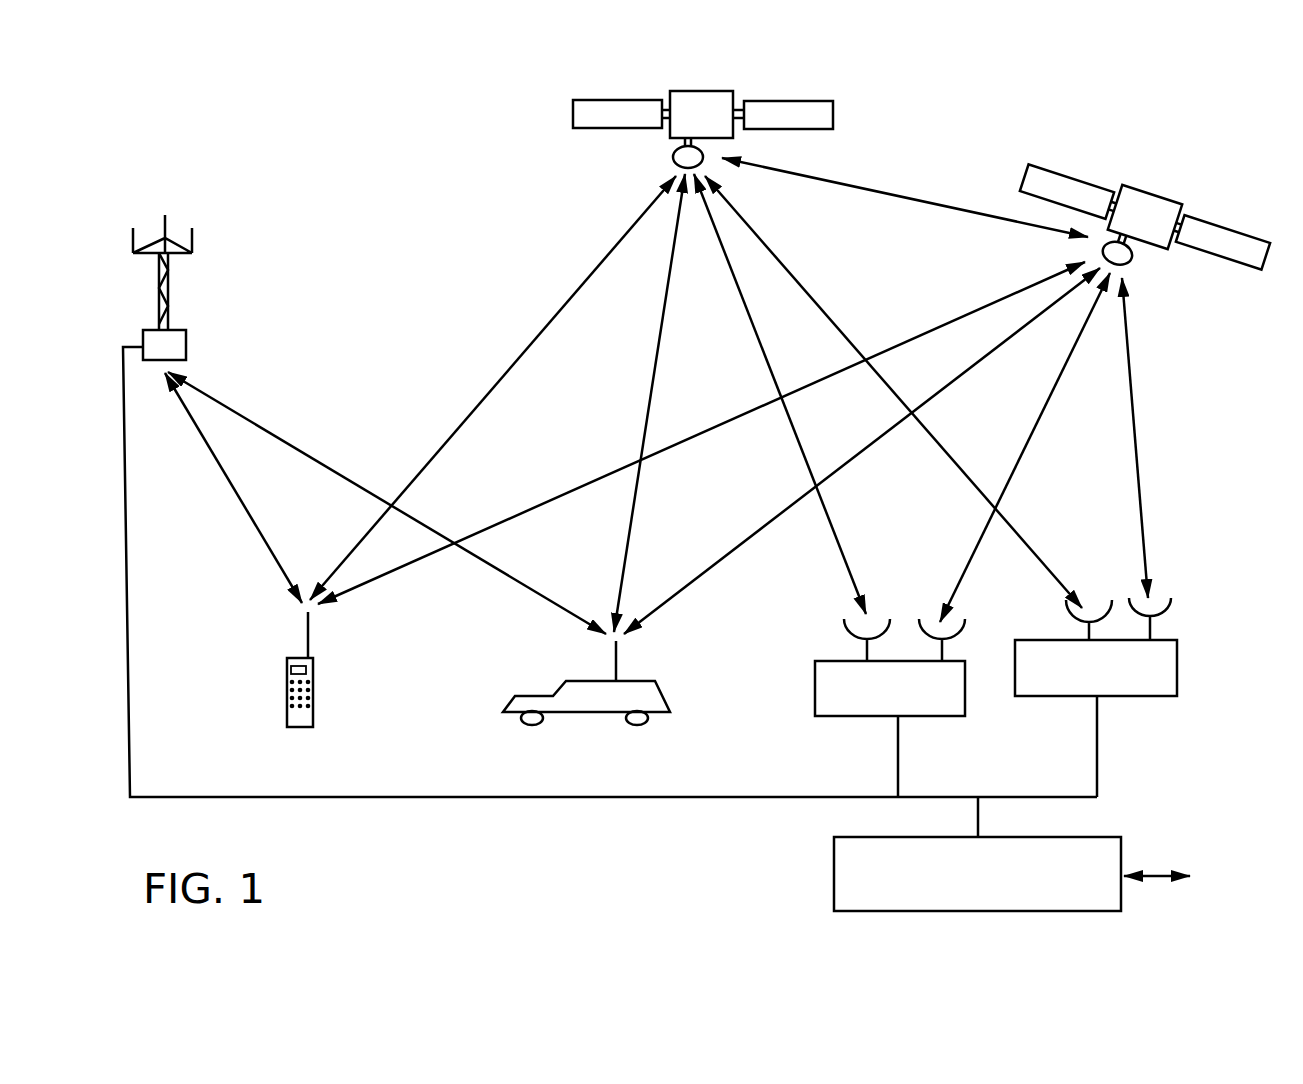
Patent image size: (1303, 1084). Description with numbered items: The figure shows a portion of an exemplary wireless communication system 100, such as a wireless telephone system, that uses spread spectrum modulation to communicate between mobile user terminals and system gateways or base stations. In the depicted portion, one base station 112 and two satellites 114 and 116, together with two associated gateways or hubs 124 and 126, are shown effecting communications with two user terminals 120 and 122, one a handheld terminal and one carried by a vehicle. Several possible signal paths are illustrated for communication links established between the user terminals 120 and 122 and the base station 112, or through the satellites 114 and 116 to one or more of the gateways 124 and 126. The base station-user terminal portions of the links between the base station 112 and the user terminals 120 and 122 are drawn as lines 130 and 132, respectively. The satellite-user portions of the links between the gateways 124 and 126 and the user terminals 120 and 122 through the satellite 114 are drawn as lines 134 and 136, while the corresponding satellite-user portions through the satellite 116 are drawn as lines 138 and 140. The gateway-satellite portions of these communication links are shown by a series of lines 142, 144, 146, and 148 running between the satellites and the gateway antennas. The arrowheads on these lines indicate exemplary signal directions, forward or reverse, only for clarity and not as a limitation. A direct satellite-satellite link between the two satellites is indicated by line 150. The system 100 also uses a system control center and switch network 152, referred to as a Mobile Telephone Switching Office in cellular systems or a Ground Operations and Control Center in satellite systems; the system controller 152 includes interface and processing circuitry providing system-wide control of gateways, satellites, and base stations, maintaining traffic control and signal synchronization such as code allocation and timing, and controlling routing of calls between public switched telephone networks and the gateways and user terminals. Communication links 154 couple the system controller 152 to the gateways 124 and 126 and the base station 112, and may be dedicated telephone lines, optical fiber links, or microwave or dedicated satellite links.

The communication system 100 is at (362, 205).
The base station 112 is at (176, 330).
The satellite 114 is at (800, 101).
The satellite 116 is at (1200, 222).
The user terminal 120 is at (305, 727).
The user terminal 122 is at (640, 681).
The gateway 124 is at (822, 716).
The gateway 126 is at (1133, 697).
The line 130 is at (212, 457).
The line 132 is at (247, 415).
The line 134 is at (515, 363).
The line 136 is at (650, 410).
The line 138 is at (745, 418).
The line 140 is at (746, 541).
The line 142 is at (803, 446).
The line 144 is at (862, 308).
The line 146 is at (1022, 450).
The line 148 is at (1135, 420).
The line 150 is at (953, 212).
The system controller 152 is at (1095, 911).
The communication links 154 is at (1097, 752).